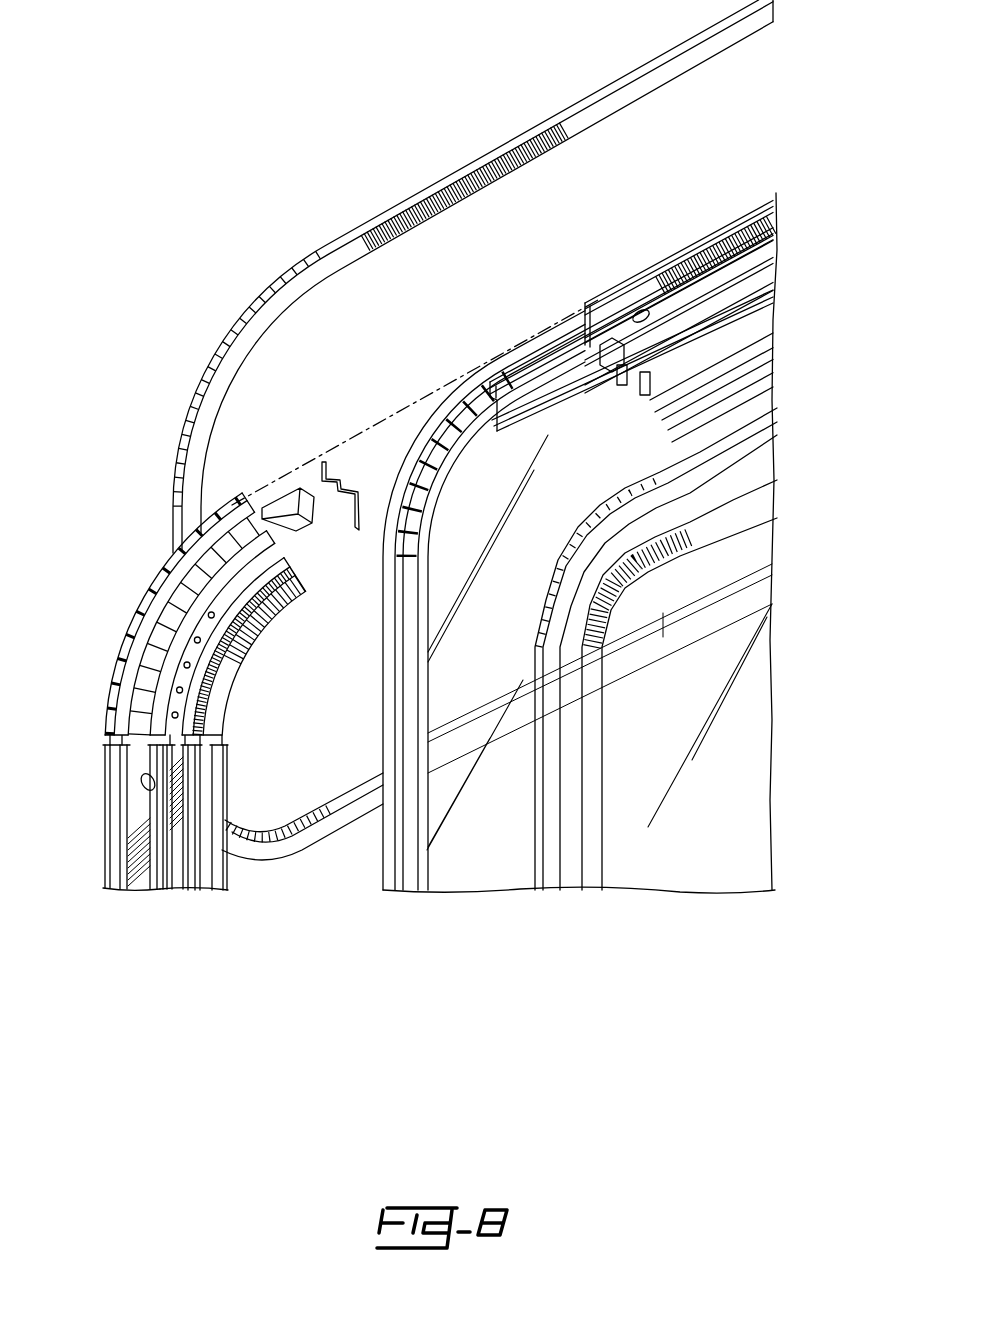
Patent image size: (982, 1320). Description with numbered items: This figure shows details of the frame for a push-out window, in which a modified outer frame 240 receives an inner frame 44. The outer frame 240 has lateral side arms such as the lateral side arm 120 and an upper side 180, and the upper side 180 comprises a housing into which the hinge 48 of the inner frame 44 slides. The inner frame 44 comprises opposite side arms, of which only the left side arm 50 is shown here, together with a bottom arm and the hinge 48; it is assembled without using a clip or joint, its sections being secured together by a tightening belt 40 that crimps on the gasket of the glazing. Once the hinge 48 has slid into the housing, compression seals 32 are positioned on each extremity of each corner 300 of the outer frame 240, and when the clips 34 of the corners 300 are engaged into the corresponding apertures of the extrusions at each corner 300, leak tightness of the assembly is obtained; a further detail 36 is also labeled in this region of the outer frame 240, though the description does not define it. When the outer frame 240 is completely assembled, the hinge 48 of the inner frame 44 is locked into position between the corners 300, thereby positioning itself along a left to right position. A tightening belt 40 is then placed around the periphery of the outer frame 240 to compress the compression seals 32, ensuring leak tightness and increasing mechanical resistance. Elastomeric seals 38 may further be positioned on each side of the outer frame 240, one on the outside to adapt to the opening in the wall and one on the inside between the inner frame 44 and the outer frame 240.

The compression seal 32 is at (330, 472).
The clip 34 is at (305, 500).
The connector 36 is at (652, 322).
The elastomeric seal 38 is at (678, 465).
The tightening belt 40 is at (733, 497).
The inner frame 44 is at (133, 810).
The hinge 48 is at (537, 357).
The side arm 50 is at (410, 857).
The lateral side arm 120 is at (212, 858).
The upper side 180 is at (724, 277).
The outer frame 240 is at (663, 295).
The corner 300 is at (148, 590).